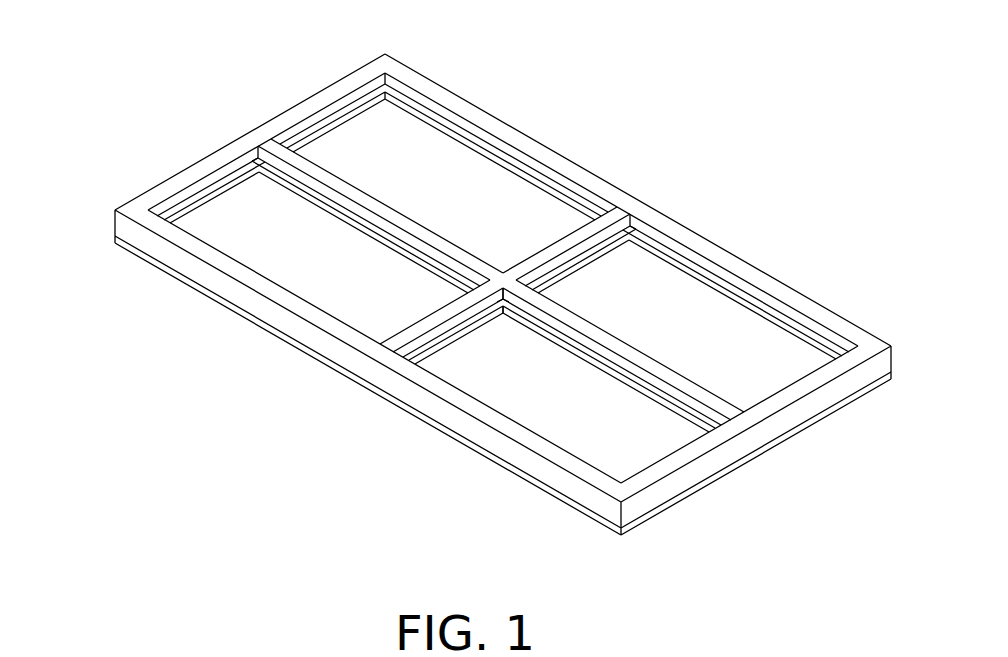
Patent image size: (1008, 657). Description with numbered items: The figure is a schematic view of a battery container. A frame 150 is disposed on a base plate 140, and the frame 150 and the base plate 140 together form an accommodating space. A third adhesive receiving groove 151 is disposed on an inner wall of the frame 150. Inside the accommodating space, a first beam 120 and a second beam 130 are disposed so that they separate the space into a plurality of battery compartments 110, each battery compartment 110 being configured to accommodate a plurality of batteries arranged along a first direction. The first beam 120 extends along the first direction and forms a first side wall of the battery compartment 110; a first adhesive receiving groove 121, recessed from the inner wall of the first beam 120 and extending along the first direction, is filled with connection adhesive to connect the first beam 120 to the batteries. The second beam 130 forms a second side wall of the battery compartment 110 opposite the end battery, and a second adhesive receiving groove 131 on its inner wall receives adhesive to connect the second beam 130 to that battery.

The battery compartment 110 is at (312, 268).
The first beam 120 is at (402, 340).
The first adhesive receiving groove 121 is at (462, 328).
The second beam 130 is at (300, 160).
The second adhesive receiving groove 131 is at (378, 228).
The base plate 140 is at (745, 456).
The frame 150 is at (168, 186).
The third adhesive receiving groove 151 is at (166, 204).